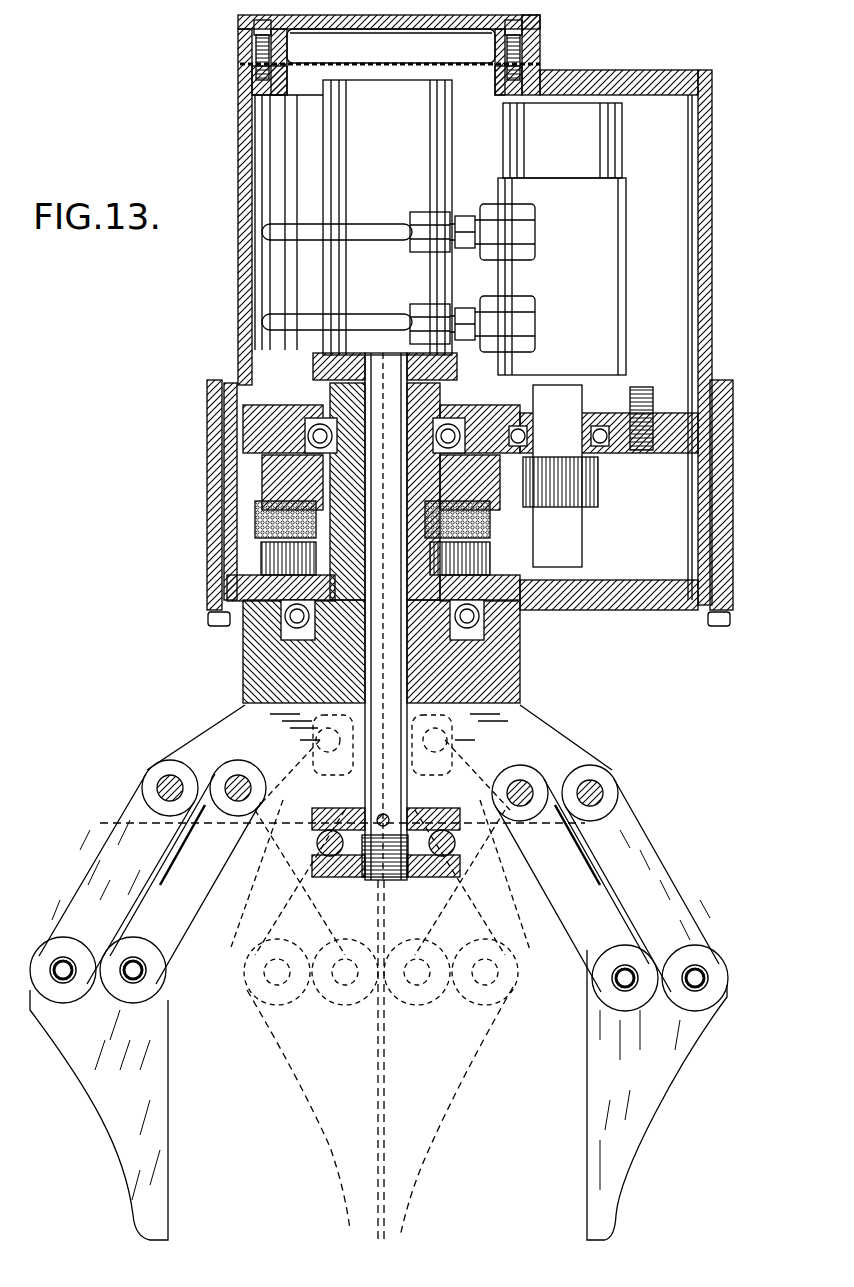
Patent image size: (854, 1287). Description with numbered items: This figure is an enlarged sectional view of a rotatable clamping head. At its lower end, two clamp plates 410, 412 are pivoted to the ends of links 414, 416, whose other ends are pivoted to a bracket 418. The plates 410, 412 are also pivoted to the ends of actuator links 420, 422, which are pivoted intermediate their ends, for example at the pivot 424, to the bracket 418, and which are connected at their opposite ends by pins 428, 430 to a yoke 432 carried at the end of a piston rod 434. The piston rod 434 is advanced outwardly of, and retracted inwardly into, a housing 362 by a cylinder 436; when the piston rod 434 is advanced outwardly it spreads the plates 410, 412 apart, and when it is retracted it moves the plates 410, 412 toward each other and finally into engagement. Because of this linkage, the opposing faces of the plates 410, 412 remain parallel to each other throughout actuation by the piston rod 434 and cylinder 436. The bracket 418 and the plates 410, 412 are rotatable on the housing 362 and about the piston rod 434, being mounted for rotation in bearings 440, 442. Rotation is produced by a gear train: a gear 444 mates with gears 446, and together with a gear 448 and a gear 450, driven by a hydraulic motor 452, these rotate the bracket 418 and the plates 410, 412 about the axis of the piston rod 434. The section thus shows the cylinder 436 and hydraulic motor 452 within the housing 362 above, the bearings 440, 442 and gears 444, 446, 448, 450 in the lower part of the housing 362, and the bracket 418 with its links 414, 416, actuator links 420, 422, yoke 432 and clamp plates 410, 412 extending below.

The housing 362 is at (703, 215).
The clamp plate 410 is at (168, 1105).
The clamp plate 412 is at (587, 1100).
The link 414 is at (100, 865).
The link 416 is at (662, 880).
The bracket 418 is at (568, 748).
The actuator link 420 is at (178, 940).
The actuator link 422 is at (582, 940).
The pivot 424 is at (233, 779).
The pin 428 is at (318, 750).
The pin 430 is at (445, 752).
The yoke 432 is at (341, 773).
The piston rod 434 is at (385, 363).
The cylinder 436 is at (330, 146).
The bearing 440 is at (287, 617).
The bearing 442 is at (305, 437).
The gear 444 is at (313, 580).
The gears 446 is at (537, 612).
The gear 448 is at (264, 487).
The gear 450 is at (598, 500).
The hydraulic motor 452 is at (613, 256).